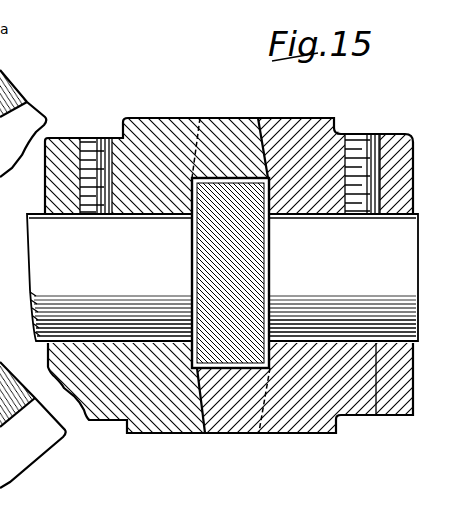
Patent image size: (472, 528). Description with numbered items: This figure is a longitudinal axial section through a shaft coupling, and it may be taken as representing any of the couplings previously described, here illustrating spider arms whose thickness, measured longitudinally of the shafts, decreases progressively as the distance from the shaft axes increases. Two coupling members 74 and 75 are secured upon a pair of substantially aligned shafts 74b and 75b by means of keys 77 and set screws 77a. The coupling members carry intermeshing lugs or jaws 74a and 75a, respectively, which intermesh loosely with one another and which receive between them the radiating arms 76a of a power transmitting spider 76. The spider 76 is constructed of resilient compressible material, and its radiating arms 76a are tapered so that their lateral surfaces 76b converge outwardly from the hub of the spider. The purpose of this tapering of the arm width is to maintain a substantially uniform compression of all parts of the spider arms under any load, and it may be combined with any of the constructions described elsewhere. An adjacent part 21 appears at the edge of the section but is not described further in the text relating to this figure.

The adjacent machine part 21 is at (0, 476).
The coupling member 74 is at (134, 118).
The intermeshing lugs or jaws 74a is at (227, 133).
The shaft 74b is at (86, 262).
The coupling member 75 is at (324, 117).
The intermeshing lugs or jaws 75a is at (236, 434).
The shaft 75b is at (363, 258).
The power transmitting spider 76 is at (218, 257).
The radiating arms 76a is at (243, 117).
The lateral surfaces 76b is at (314, 478).
The keys 77 is at (376, 415).
The set screws 77a is at (94, 143).